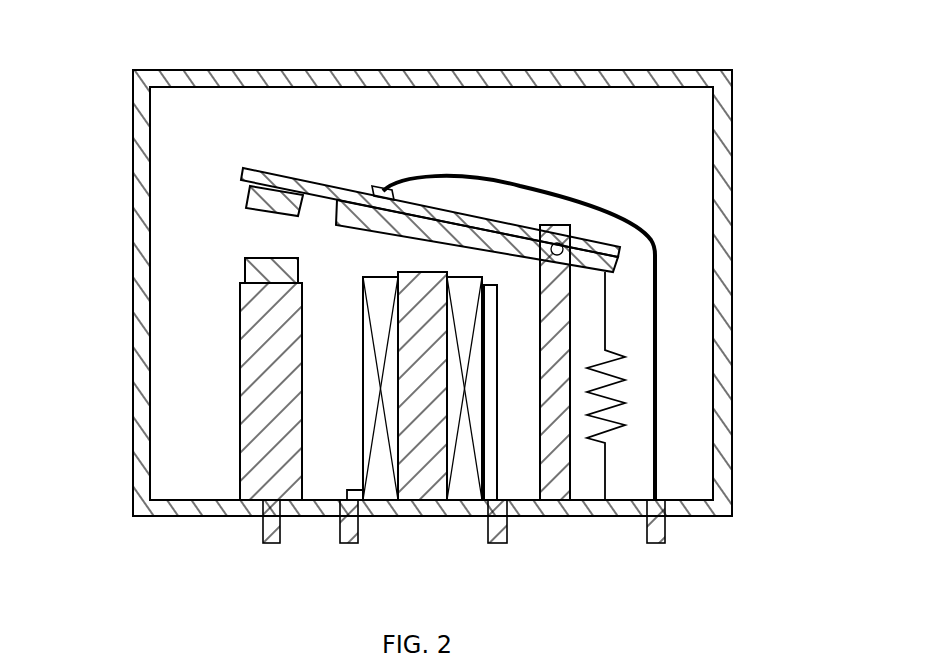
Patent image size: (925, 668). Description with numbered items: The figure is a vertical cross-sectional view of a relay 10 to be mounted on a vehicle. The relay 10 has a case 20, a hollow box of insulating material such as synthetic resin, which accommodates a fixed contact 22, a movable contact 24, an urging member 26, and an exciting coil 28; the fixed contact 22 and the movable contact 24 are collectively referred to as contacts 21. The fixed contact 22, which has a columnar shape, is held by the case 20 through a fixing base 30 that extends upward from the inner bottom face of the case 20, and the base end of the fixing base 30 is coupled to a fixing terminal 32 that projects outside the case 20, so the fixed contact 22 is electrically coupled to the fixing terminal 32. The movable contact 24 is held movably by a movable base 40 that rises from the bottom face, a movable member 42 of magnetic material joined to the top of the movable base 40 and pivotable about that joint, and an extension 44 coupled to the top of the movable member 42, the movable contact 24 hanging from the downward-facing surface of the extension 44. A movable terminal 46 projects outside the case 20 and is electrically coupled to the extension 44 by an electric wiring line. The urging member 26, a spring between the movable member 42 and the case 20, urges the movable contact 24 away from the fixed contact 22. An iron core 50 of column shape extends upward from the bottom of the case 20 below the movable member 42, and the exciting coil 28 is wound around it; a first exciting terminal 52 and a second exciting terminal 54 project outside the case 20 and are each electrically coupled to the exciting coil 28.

The relay 10 is at (437, 70).
The case 20 is at (580, 70).
The contacts 21 is at (165, 236).
The fixed contact 22 is at (244, 277).
The movable contact 24 is at (249, 196).
The urging member 26 is at (612, 397).
The exciting coil 28 is at (363, 371).
The fixing base 30 is at (240, 328).
The fixing terminal 32 is at (271, 545).
The movable base 40 is at (571, 293).
The movable member 42 is at (620, 257).
The extension 44 is at (350, 192).
The movable terminal 46 is at (655, 545).
The iron core 50 is at (400, 420).
The first exciting terminal 52 is at (349, 545).
The second exciting terminal 54 is at (497, 545).